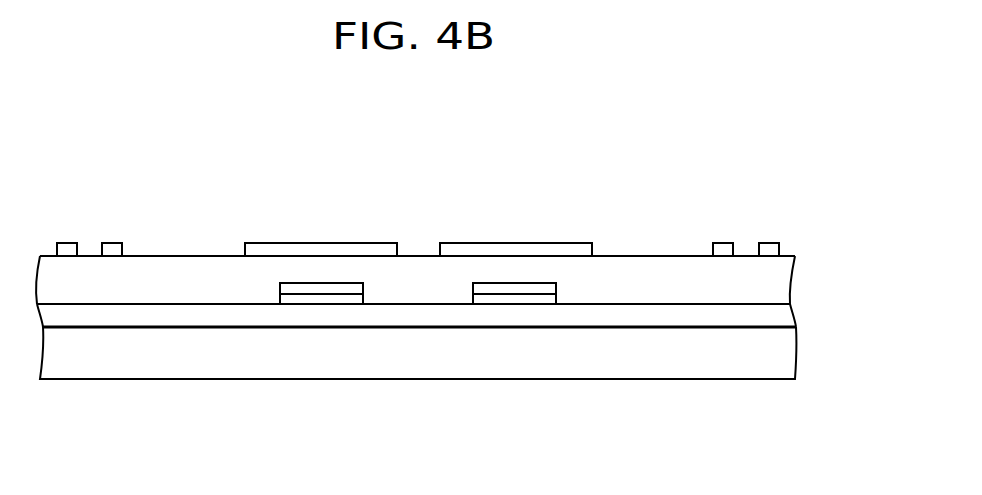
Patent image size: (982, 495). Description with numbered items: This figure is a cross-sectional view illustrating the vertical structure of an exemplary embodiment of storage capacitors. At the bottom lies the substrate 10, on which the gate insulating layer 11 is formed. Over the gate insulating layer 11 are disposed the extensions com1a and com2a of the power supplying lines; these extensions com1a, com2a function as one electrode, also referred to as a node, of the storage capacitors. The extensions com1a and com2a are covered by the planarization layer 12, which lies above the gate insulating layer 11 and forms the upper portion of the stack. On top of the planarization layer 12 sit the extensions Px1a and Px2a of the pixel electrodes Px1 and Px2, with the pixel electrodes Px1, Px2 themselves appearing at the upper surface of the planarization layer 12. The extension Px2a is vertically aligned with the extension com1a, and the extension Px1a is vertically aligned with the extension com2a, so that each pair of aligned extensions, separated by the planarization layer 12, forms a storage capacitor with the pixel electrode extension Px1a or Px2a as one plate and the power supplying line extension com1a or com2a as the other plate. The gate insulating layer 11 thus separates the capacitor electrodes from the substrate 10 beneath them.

The substrate 10 is at (797, 356).
The gate insulating layer 11 is at (791, 316).
The planarization layer 12 is at (789, 284).
The pixel electrode Px1 is at (67, 240).
The pixel electrode Px2 is at (112, 240).
The extension of pixel electrode Px1a is at (515, 245).
The extension of pixel electrode Px2a is at (321, 245).
The extension of power supplying line com1a is at (342, 284).
The extension of power supplying line com2a is at (535, 284).